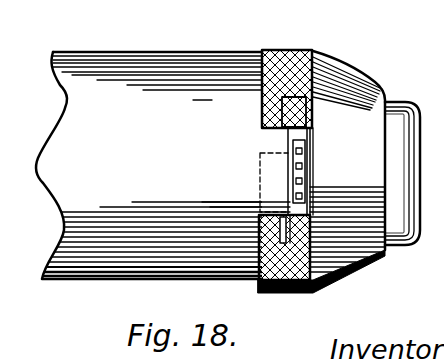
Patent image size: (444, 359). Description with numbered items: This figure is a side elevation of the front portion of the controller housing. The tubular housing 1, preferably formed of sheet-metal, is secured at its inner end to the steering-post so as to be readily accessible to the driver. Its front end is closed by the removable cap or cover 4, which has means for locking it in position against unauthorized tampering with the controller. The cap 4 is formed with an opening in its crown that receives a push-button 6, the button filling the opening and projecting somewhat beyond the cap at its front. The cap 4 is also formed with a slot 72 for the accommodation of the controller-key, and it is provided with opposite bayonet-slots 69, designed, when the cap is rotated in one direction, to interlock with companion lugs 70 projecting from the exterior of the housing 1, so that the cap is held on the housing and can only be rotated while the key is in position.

The tubular housing 1 is at (178, 63).
The removable cap or cover 4 is at (344, 68).
The push-button 6 is at (410, 103).
The companion lugs 70 is at (292, 207).
The slot of the cap 72 is at (300, 137).
The bayonet-slots 69 is at (287, 243).